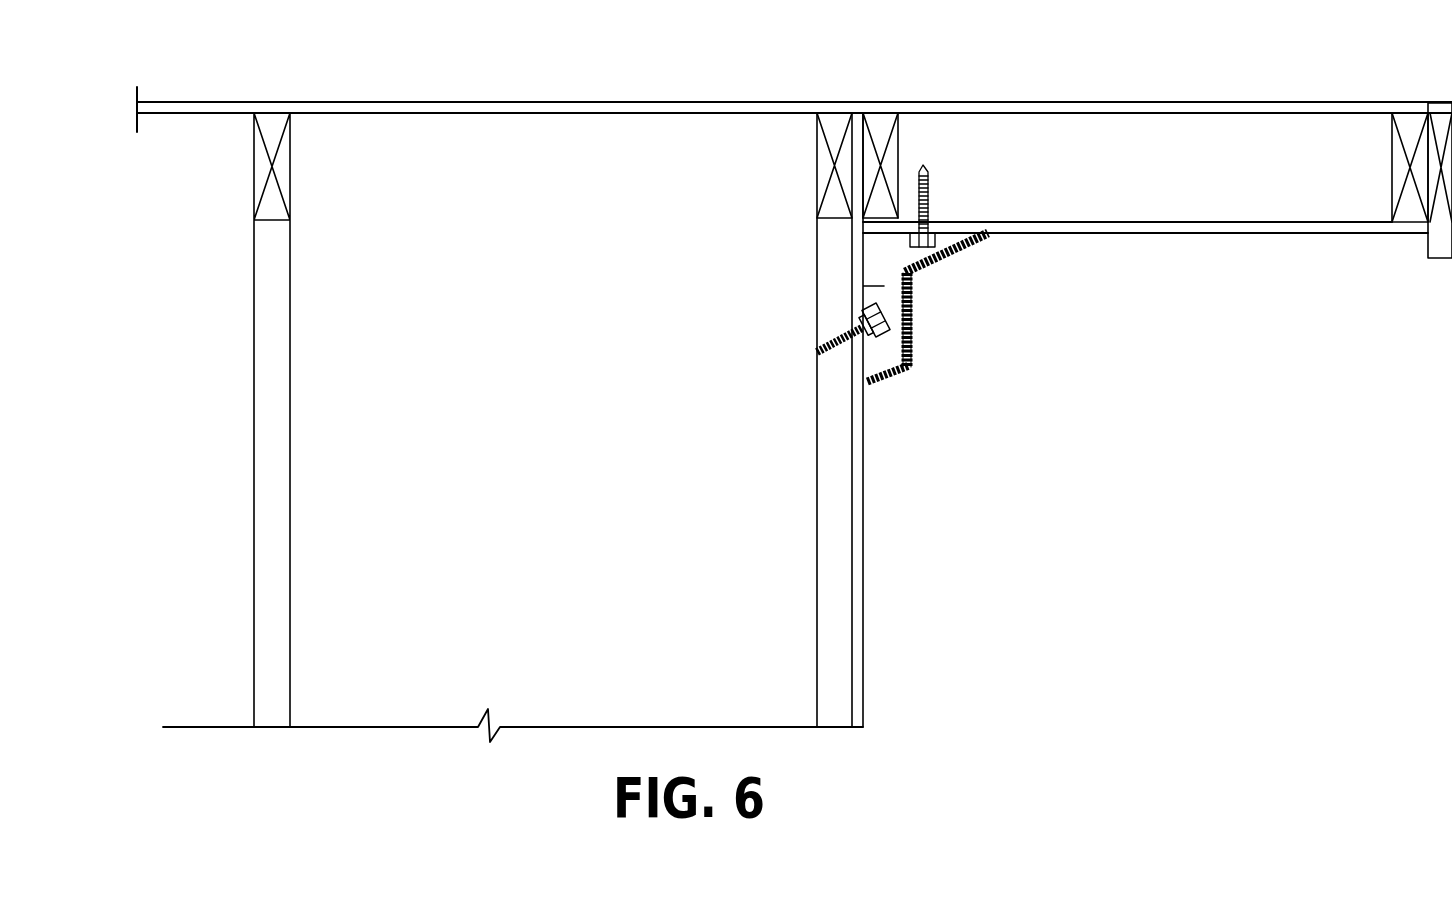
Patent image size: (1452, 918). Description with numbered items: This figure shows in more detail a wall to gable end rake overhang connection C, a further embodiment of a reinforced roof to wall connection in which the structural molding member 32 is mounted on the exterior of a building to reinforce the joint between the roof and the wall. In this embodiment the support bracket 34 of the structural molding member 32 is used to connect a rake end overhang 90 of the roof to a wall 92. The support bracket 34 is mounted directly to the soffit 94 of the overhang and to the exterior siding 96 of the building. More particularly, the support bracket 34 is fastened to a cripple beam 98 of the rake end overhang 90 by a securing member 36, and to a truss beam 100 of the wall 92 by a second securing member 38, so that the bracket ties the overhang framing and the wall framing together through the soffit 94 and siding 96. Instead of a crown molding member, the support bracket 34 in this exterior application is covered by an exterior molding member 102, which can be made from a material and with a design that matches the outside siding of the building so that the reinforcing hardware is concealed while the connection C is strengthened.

The structural molding member 32 is at (910, 397).
The support bracket 34 is at (912, 290).
The securing member 36 is at (928, 188).
The securing member 38 is at (818, 351).
The rake end overhang 90 is at (1135, 135).
The wall 92 is at (833, 653).
The soffit 94 is at (1222, 226).
The exterior siding 96 is at (857, 550).
The cripple beam 98 is at (958, 138).
The truss beam 100 is at (826, 500).
The exterior molding member 102 is at (965, 254).
The wall to gable end rake overhang connection C is at (1097, 407).